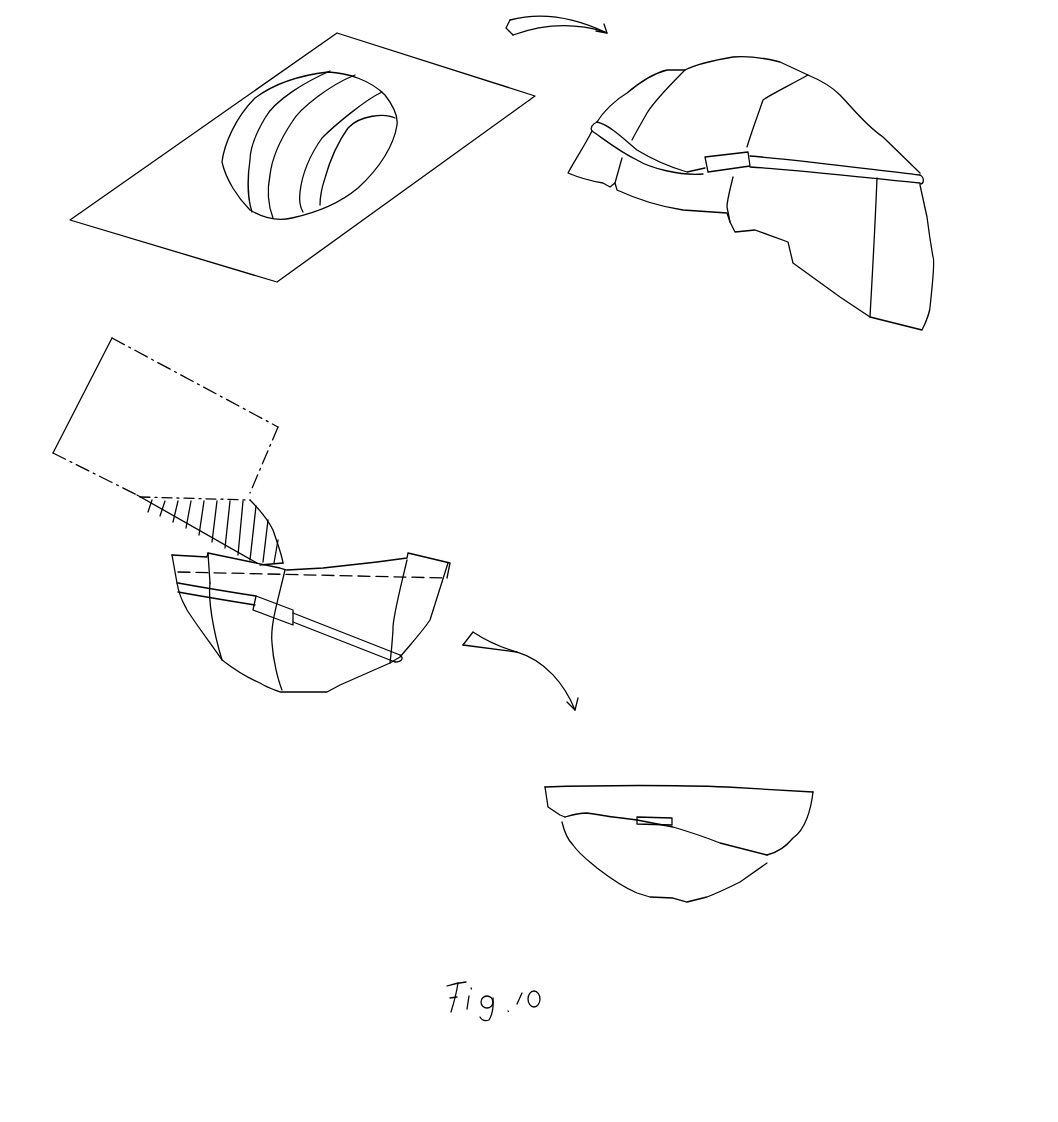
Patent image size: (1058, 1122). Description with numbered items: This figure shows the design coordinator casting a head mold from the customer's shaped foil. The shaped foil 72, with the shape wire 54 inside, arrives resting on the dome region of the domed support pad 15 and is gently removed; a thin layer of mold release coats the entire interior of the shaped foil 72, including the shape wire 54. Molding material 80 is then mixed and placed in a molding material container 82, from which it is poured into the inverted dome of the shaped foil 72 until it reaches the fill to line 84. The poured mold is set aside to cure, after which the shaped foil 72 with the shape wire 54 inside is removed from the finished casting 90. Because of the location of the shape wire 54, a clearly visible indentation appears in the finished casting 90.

The domed support pad 15 is at (195, 150).
The shaped foil 72 is at (837, 100).
The shape wire 54 is at (922, 168).
The molding material container 82 is at (197, 387).
The molding material 80 is at (253, 523).
The fill to line 84 is at (433, 577).
The finished casting 90 is at (762, 890).